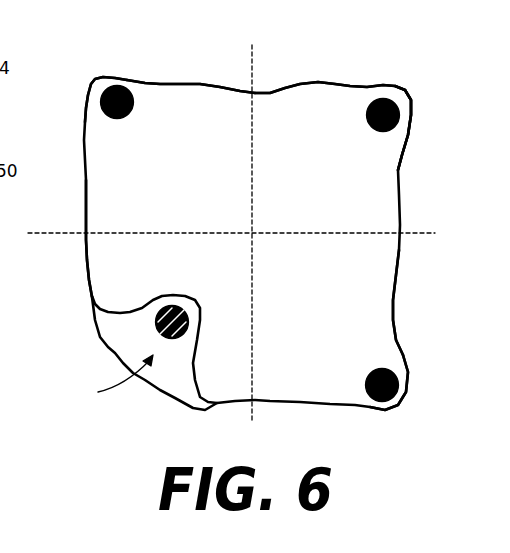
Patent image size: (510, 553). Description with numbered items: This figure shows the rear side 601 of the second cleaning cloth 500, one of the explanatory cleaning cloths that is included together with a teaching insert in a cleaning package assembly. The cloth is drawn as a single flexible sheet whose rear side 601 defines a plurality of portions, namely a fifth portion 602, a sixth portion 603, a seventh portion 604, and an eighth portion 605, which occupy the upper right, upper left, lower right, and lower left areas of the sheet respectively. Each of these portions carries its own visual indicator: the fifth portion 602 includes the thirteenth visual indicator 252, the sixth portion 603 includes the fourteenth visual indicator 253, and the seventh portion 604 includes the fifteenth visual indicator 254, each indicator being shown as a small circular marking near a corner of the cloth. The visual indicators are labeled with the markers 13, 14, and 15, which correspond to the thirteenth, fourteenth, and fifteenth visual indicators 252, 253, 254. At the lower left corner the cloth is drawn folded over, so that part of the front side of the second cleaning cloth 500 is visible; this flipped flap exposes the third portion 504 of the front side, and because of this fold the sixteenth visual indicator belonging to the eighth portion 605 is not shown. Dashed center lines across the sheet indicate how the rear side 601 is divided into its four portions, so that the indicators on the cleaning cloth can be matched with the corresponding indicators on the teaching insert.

The second cleaning cloth 500 is at (422, 127).
The rear side of the second cleaning cloth 601 is at (222, 210).
The fifth portion 602 is at (300, 117).
The sixth portion 603 is at (213, 113).
The seventh portion 604 is at (343, 307).
The eighth portion 605 is at (127, 255).
The thirteenth visual indicator 252 is at (383, 132).
The fourteenth visual indicator 253 is at (96, 90).
The fifteenth visual indicator 254 is at (398, 383).
The third portion 504 is at (117, 322).
The fastener location 13 is at (117, 102).
The fastener location 14 is at (383, 115).
The fastener location 15 is at (382, 385).